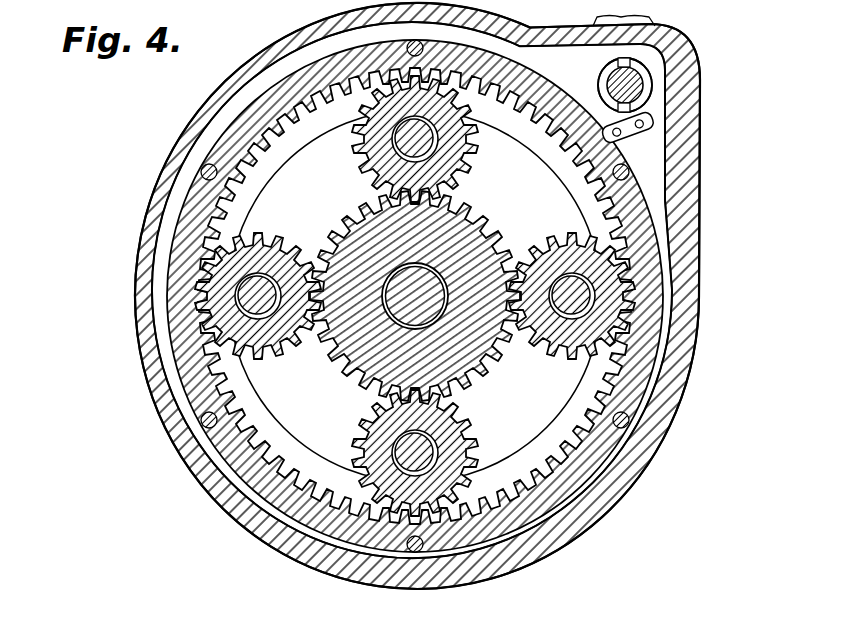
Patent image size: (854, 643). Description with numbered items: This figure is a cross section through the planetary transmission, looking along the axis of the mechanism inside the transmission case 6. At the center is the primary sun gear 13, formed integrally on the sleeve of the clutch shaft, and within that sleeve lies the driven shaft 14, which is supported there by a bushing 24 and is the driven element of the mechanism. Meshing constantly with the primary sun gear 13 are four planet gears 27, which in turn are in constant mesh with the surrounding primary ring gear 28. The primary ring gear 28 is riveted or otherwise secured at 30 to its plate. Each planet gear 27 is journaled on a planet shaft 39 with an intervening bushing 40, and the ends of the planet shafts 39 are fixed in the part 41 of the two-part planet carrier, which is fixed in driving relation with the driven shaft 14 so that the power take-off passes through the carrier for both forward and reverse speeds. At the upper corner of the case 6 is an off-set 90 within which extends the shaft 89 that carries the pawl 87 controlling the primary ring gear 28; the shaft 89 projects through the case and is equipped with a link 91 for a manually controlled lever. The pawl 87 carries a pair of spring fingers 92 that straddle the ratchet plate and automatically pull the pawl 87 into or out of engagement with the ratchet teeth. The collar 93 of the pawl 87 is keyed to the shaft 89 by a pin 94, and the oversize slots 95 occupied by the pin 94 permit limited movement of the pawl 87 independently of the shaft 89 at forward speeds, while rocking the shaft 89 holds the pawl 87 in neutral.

The transmission case 6 is at (150, 384).
The primary sun gear 13 is at (497, 353).
The driven shaft 14 is at (405, 317).
The bushing 24 is at (390, 303).
The planet gears 27 is at (628, 278).
The primary ring gear 28 is at (643, 232).
The rivets 30 is at (623, 422).
The planet shafts 39 is at (583, 300).
The bushings 40 is at (590, 310).
The planet carrier part 41 is at (573, 373).
The pawl 87 is at (653, 167).
The shaft 89 is at (613, 78).
The off-set 90 is at (673, 182).
The link 91 is at (653, 25).
The spring fingers 92 is at (640, 135).
The collar 93 is at (650, 88).
The pin 94 is at (650, 67).
The slots 95 is at (637, 50).